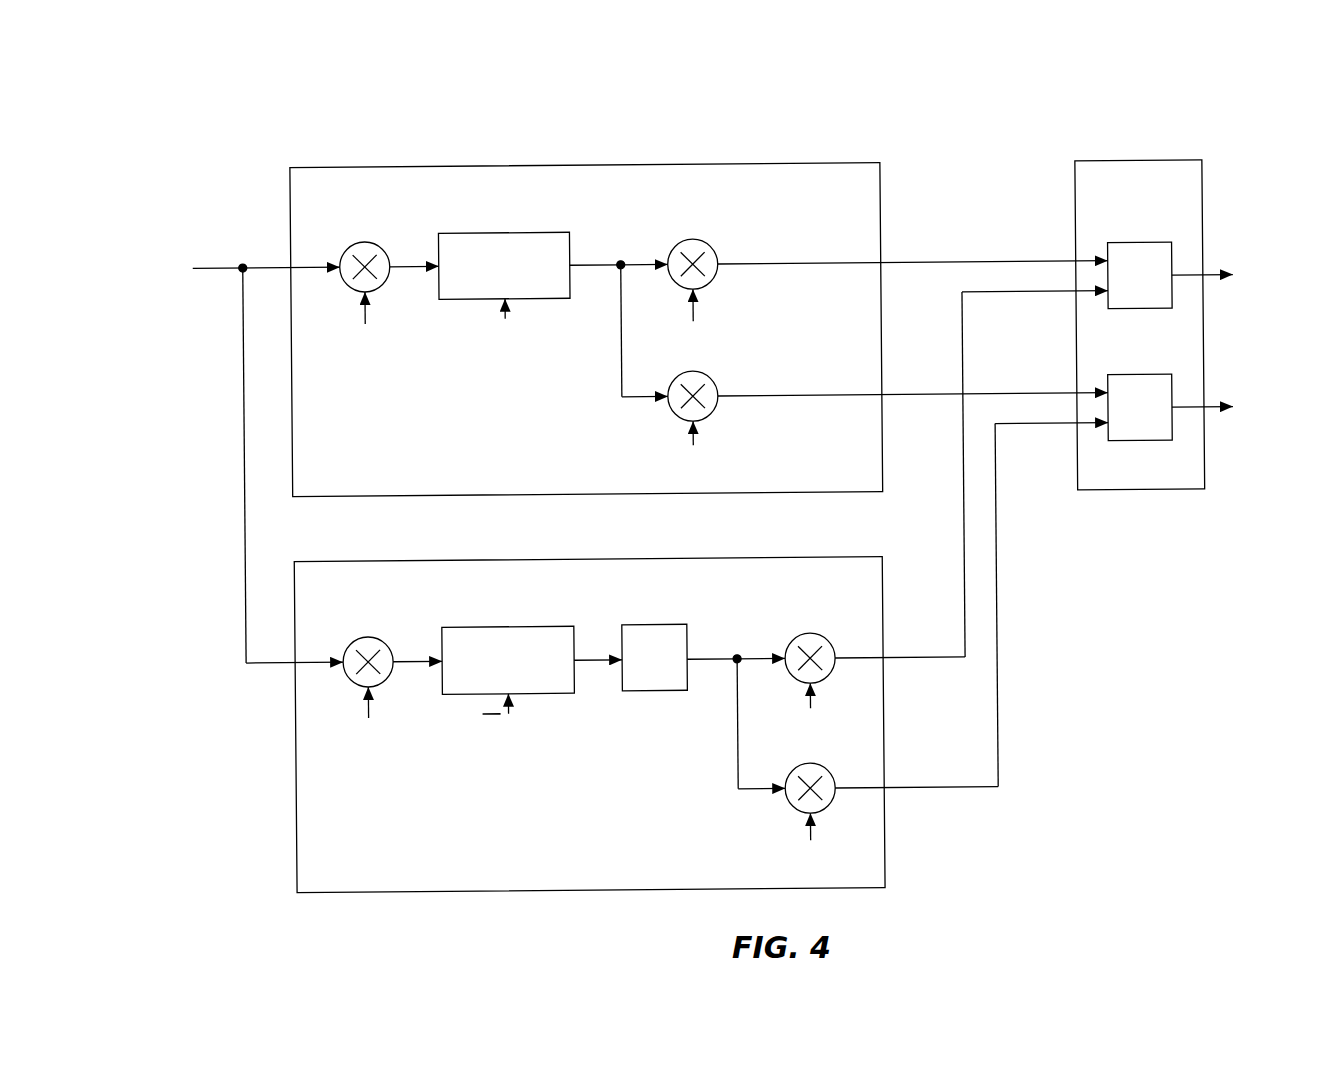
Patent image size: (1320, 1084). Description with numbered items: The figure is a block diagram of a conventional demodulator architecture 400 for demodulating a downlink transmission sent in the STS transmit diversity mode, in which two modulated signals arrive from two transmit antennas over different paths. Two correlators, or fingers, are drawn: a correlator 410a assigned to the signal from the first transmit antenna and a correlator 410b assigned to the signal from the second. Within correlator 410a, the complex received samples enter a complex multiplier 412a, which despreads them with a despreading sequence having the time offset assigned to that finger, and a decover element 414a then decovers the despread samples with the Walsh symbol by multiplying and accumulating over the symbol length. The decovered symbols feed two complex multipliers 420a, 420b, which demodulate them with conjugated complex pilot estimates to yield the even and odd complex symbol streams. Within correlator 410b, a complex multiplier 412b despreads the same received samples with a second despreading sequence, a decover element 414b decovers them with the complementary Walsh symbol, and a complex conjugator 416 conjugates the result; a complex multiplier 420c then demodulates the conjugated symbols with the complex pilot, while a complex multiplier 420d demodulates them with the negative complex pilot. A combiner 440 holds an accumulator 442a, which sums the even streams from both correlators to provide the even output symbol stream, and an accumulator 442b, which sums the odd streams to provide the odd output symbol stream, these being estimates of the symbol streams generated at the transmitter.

The demodulator architecture 400 is at (1225, 130).
The correlator 410a is at (588, 165).
The correlator 410b is at (585, 559).
The complex multiplier 412a is at (362, 240).
The complex multiplier 412b is at (366, 636).
The decover element 414a is at (498, 232).
The decover element 414b is at (504, 626).
The complex conjugator 416 is at (653, 625).
The complex multiplier 420a is at (691, 240).
The complex multiplier 420b is at (694, 372).
The complex multiplier 420c is at (806, 635).
The complex multiplier 420d is at (806, 766).
The combiner 440 is at (1138, 165).
The accumulator 442a is at (1136, 247).
The accumulator 442b is at (1135, 379).